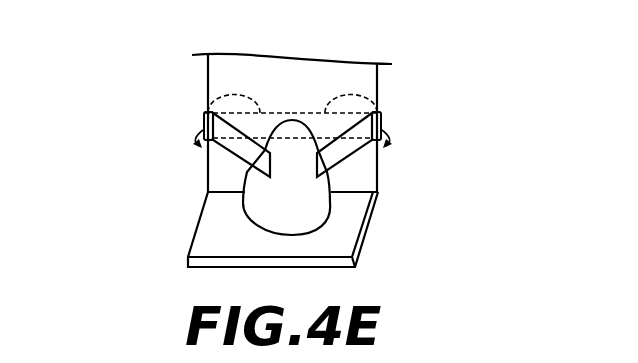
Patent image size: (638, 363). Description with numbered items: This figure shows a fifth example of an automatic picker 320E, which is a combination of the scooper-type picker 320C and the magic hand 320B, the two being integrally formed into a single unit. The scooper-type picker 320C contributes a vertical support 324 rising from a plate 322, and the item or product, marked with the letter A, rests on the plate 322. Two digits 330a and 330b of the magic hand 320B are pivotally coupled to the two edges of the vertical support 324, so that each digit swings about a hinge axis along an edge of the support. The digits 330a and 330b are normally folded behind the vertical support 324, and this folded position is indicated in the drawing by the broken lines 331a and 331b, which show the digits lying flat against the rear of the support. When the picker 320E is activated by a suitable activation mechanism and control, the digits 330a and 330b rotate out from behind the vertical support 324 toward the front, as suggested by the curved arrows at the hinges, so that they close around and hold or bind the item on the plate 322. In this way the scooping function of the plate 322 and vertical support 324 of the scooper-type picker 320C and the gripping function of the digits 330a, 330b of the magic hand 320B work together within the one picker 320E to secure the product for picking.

The picker 320E is at (452, 146).
The scooper-type picker 320C is at (200, 72).
The vertical support 324 is at (298, 78).
The broken lines 331a is at (292, 102).
The broken lines 331b is at (292, 102).
The digit 330a is at (243, 150).
The digit 330b is at (345, 146).
The magic hand 320B is at (222, 156).
The plate 322 is at (333, 246).